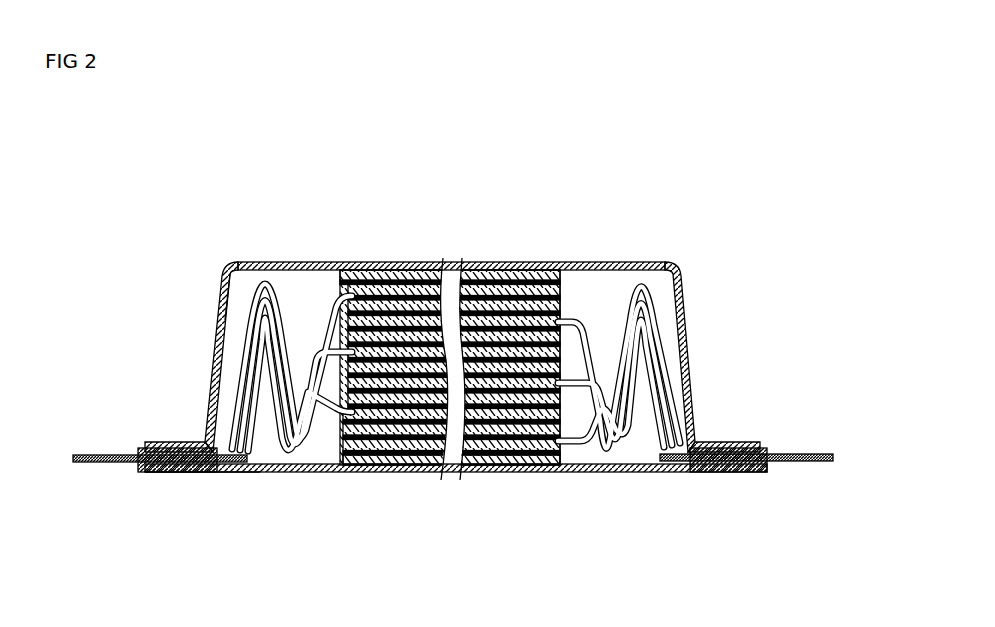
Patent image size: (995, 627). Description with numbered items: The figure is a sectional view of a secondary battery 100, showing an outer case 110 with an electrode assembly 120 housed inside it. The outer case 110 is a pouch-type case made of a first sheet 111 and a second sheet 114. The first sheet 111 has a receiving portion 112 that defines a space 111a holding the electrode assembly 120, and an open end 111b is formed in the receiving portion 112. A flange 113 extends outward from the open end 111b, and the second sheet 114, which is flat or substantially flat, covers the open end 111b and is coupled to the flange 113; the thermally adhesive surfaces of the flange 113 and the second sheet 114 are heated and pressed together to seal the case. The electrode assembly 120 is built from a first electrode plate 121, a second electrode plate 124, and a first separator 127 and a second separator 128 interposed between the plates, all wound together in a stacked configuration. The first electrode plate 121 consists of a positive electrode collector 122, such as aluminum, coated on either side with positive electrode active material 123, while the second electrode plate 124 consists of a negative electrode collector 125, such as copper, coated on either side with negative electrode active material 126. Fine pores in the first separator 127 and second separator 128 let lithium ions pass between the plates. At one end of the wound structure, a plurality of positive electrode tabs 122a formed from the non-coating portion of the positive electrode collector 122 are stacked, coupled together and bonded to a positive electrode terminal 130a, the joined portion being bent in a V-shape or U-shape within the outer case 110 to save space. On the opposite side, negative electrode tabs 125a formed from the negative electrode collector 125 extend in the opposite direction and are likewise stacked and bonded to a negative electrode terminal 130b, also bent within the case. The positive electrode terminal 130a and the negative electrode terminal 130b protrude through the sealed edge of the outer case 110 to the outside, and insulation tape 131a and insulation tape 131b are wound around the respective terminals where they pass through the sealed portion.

The secondary battery 100 is at (183, 190).
The outer case 110 is at (708, 428).
The first sheet 111 is at (230, 268).
The space 111a is at (245, 292).
The open end 111b is at (263, 482).
The receiving portion 112 is at (298, 262).
The flange 113 is at (167, 442).
The second sheet 114 is at (203, 473).
The electrode assembly 120 is at (576, 282).
The first electrode plate 121 is at (343, 262).
The positive electrode collector 122 is at (370, 268).
The positive electrode tabs 122a is at (247, 372).
The positive electrode active material 123 is at (430, 262).
The second electrode plate 124 is at (563, 475).
The negative electrode collector 125 is at (398, 475).
The negative electrode tabs 125a is at (652, 372).
The negative electrode active material 126 is at (517, 475).
The first separator 127 is at (465, 262).
The second separator 128 is at (515, 262).
The positive electrode terminal 130a is at (90, 453).
The negative electrode terminal 130b is at (813, 450).
The insulation tape 131a is at (140, 473).
The insulation tape 131b is at (763, 473).